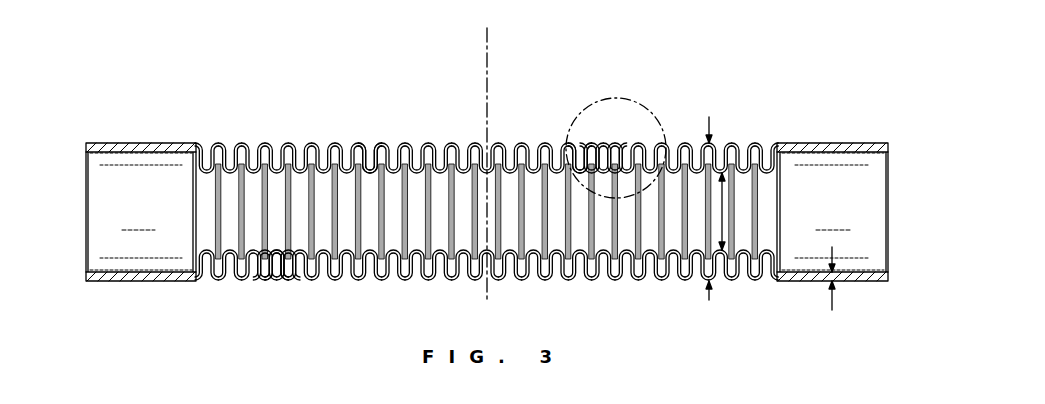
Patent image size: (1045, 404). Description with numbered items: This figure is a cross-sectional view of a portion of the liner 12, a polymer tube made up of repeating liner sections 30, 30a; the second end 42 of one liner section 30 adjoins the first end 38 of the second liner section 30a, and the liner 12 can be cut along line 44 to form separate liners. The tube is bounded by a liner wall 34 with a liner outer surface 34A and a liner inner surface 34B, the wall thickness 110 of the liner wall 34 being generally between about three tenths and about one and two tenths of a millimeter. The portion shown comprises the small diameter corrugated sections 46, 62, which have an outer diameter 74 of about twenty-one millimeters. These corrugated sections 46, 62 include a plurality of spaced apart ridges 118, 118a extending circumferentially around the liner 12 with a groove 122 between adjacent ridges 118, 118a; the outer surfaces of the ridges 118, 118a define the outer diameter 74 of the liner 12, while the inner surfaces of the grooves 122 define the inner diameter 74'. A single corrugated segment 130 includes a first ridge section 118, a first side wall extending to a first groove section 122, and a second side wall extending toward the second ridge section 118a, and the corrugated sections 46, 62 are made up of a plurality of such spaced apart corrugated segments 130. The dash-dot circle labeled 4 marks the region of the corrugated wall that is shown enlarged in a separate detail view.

The liner 12 is at (487, 177).
The liner section 30 is at (141, 209).
The second liner section 30a is at (836, 143).
The liner wall 34 is at (134, 143).
The liner outer surface 34A is at (113, 134).
The liner inner surface 34B is at (160, 158).
The first end 38 is at (490, 243).
The second end 42 is at (484, 208).
The line 44 is at (490, 42).
The first small diameter corrugated section 46 is at (773, 78).
The second small diameter corrugated section 62 is at (483, 78).
The outer diameter 74 is at (684, 219).
The inner diameter 74' is at (771, 211).
The wall thickness 110 is at (832, 303).
The ridge 118 is at (589, 150).
The ridge 118a is at (618, 146).
The groove 122 is at (571, 167).
The corrugated segment 130 is at (358, 138).
The detail view region of FIG. 4 is at (658, 99).